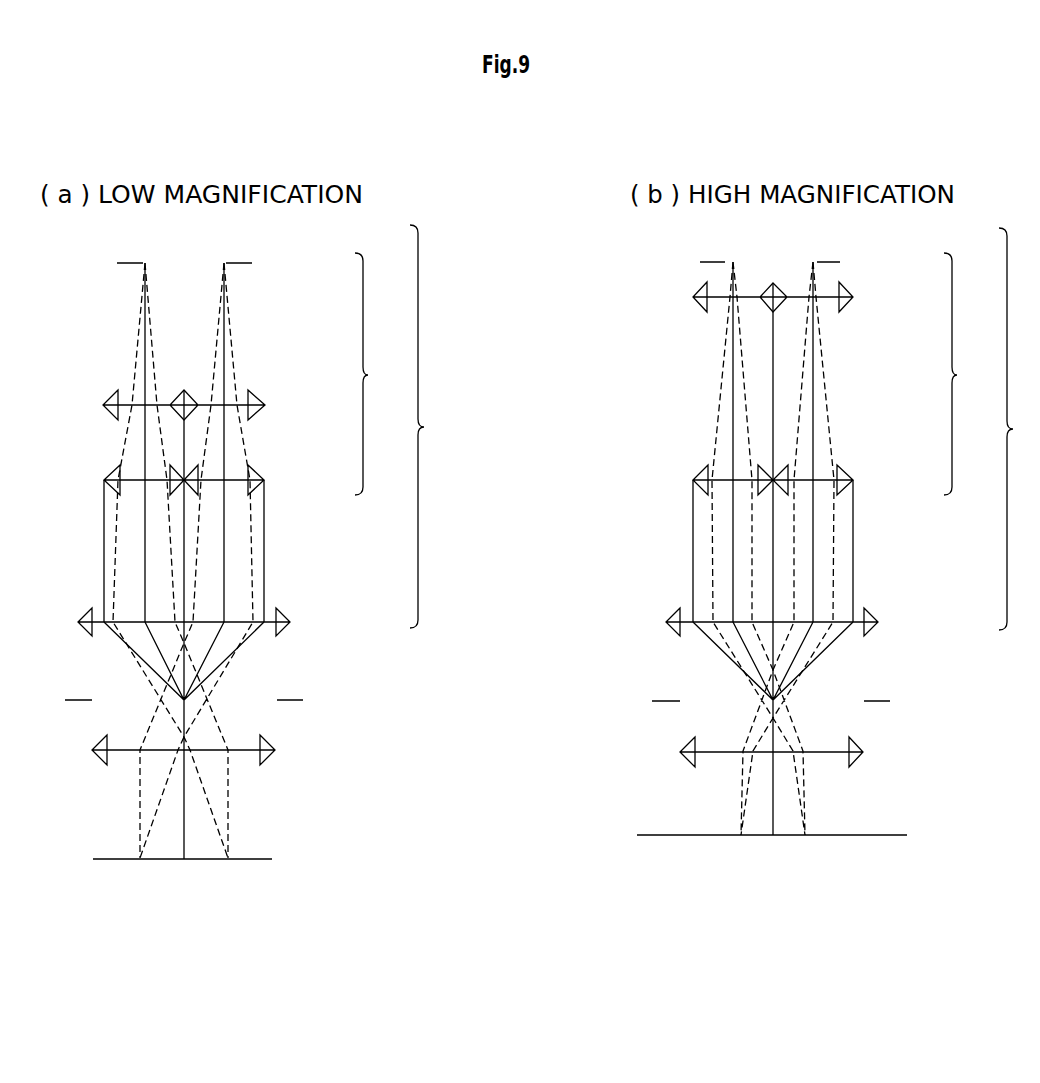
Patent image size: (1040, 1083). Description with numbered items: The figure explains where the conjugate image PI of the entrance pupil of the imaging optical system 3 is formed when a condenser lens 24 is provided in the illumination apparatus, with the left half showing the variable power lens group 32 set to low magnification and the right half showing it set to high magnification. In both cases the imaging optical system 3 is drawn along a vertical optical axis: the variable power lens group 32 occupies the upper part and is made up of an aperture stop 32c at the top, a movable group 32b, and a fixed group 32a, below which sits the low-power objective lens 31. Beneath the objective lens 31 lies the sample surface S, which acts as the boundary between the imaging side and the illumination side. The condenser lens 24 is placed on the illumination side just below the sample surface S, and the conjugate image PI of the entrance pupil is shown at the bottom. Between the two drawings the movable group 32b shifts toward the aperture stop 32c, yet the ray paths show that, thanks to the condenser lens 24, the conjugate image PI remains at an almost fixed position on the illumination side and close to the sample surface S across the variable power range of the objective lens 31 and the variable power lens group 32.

The aperture stop 32c is at (882, 267).
The movable group 32b is at (895, 305).
The fixed group 32a is at (893, 486).
The variable power lens group 32 is at (673, 374).
The objective lens 31 is at (920, 628).
The imaging optical system 3 is at (721, 427).
The condenser lens 24 is at (905, 758).
The sample surface S is at (932, 707).
The conjugate image of the entrance pupil PI is at (949, 845).